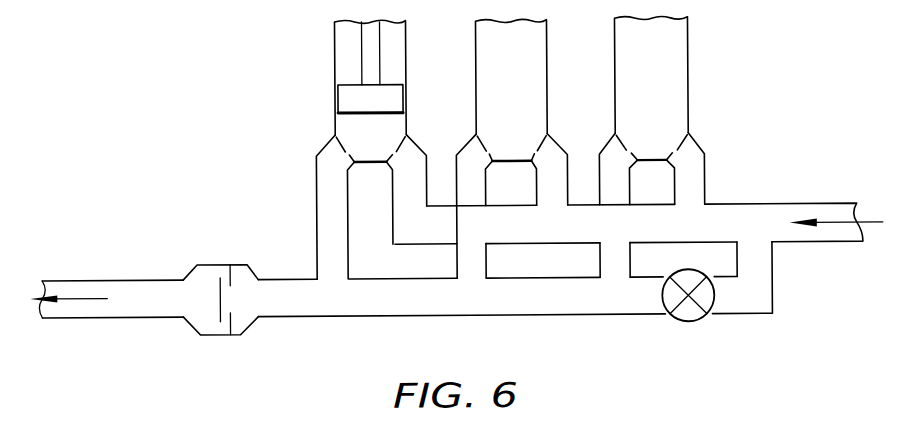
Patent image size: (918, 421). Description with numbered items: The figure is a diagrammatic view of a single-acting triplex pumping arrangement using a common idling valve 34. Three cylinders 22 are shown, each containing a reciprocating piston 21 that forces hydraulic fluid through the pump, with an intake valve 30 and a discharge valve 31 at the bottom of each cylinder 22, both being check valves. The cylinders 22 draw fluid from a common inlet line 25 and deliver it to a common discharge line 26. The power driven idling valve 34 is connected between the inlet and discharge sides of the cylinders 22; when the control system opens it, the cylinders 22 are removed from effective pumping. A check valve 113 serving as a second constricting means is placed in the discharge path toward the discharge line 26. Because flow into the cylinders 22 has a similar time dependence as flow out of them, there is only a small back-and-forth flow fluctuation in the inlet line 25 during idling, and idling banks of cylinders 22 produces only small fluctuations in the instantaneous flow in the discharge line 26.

The piston 21 is at (404, 98).
The cylinder 22 is at (336, 66).
The inlet line 25 is at (810, 214).
The discharge line 26 is at (110, 307).
The intake valve 30 is at (387, 147).
The discharge valve 31 is at (343, 157).
The idling valve 34 is at (677, 322).
The check valve 113 is at (260, 321).